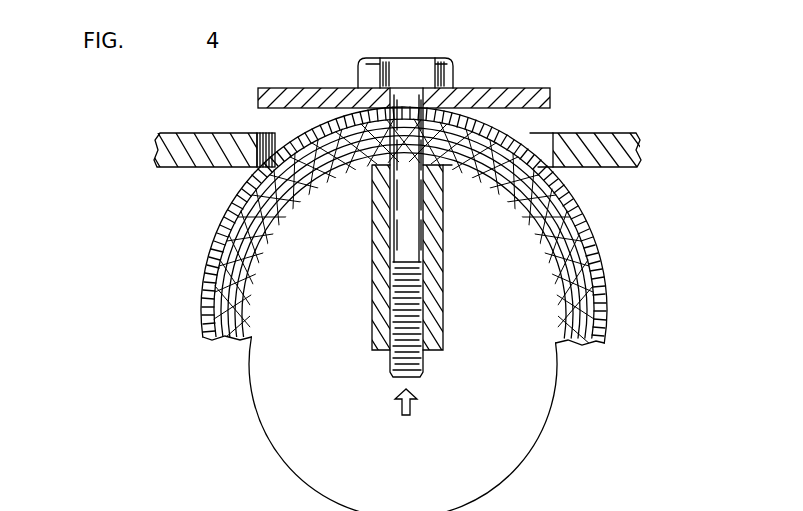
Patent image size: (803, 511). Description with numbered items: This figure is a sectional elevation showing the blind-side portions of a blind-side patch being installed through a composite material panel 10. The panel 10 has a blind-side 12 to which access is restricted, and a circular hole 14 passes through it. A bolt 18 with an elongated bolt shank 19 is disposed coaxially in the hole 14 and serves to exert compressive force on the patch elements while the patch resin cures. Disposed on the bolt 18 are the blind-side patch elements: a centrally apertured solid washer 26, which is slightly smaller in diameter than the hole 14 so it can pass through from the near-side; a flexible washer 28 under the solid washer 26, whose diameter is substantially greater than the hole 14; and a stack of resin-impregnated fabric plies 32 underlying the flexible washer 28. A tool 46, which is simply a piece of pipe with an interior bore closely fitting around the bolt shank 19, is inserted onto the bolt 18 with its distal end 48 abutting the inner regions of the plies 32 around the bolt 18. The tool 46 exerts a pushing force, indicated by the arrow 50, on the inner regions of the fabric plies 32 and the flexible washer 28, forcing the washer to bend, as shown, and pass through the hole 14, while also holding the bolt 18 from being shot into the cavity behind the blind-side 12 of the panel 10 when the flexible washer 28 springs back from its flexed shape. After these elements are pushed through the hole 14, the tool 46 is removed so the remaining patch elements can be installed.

The composite material panel 10 is at (640, 118).
The blind-side 12 is at (177, 132).
The hole 14 is at (547, 139).
The bolt 18 is at (432, 55).
The bolt shank 19 is at (403, 359).
The solid washer 26 is at (495, 88).
The flexible washer 28 is at (283, 138).
The fabric plies 32 is at (558, 312).
The tool 46 is at (372, 303).
The distal end 48 is at (450, 173).
The direction of applied force 50 is at (418, 403).